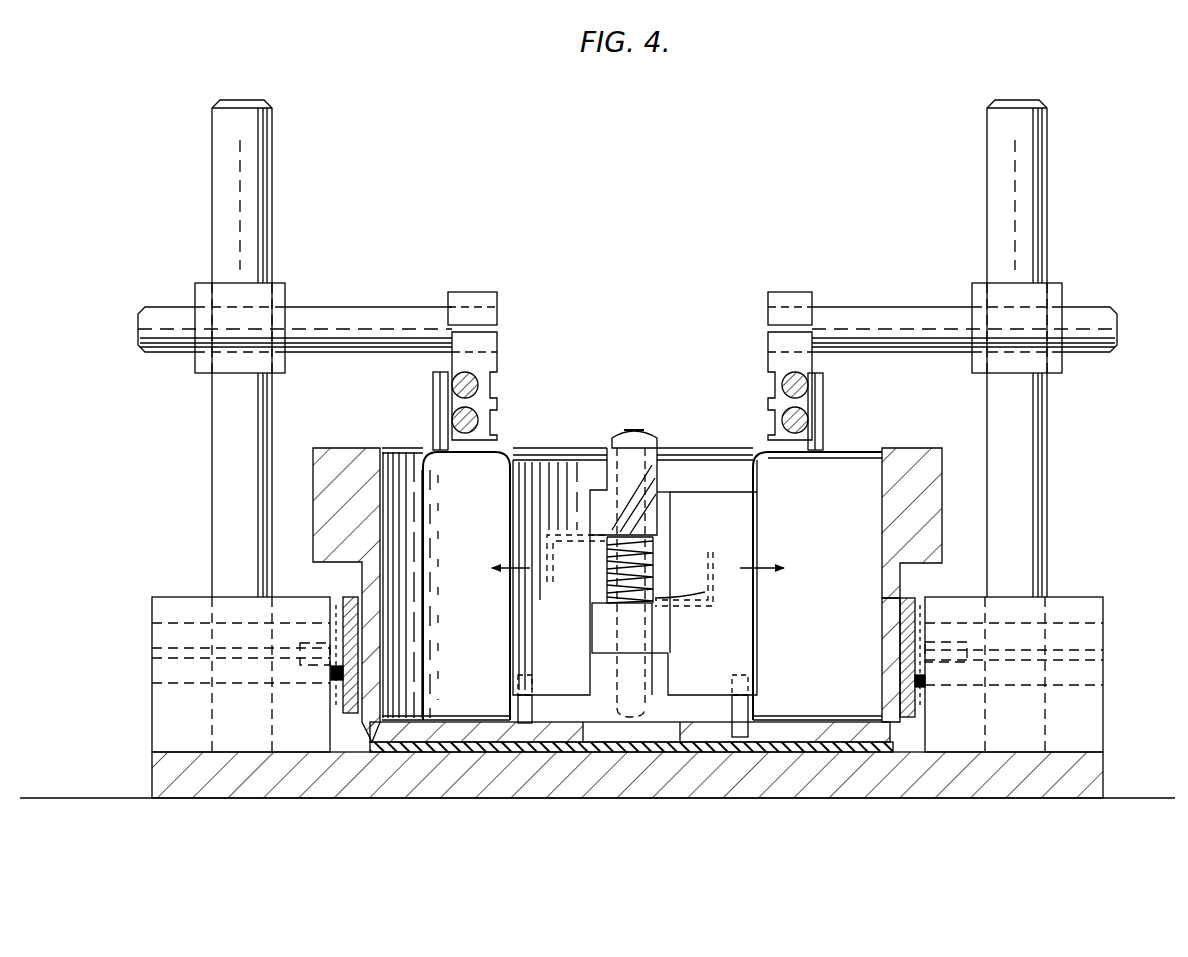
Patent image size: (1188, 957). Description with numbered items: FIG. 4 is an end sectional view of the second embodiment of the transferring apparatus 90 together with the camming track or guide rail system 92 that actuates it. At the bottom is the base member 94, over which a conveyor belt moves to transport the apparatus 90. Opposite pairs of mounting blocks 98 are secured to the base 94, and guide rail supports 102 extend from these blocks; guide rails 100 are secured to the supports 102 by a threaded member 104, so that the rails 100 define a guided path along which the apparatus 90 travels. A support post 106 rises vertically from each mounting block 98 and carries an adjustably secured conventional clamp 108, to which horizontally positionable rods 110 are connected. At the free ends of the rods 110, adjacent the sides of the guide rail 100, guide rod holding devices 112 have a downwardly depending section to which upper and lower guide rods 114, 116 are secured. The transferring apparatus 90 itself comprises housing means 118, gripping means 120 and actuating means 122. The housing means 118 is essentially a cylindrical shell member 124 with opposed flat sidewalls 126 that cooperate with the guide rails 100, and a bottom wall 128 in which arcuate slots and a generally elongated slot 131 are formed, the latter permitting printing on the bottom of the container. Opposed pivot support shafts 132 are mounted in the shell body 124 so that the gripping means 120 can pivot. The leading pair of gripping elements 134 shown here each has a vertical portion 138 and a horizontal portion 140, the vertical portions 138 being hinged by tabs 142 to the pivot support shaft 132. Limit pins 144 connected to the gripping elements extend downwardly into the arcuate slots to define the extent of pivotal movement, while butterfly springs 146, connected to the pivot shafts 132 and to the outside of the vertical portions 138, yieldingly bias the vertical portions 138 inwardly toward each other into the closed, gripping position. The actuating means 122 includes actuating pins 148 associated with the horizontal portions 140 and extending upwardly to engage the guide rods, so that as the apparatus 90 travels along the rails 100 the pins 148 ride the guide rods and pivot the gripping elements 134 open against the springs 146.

The transferring apparatus 90 is at (918, 424).
The camming track or guide rail system 92 is at (915, 134).
The base member 94 is at (1103, 760).
The mounting blocks 98 is at (172, 600).
The guide rails 100 is at (342, 596).
The guide rail supports 102 is at (338, 620).
The threaded member 104 is at (334, 682).
The support post 106 is at (262, 160).
The clamp 108 is at (282, 294).
The horizontally positionable rods 110 is at (352, 312).
The guide rod holding devices 112 is at (497, 334).
The upper guide rod 114 is at (477, 382).
The lower guide rod 116 is at (453, 422).
The housing means 118 is at (320, 446).
The gripping means 120 is at (578, 438).
The actuating means 122 is at (437, 378).
The cylindrical shell member 124 is at (885, 506).
The flat sidewalls 126 is at (352, 580).
The bottom wall 128 is at (822, 722).
The elongated slot 131 is at (586, 733).
The pivot support shafts 132 is at (618, 432).
The leading pair of gripping elements 134 is at (522, 456).
The vertical portions 138 is at (520, 508).
The horizontal portions 140 is at (427, 463).
The tabs 142 is at (662, 462).
The limit pins 144 is at (534, 710).
The butterfly springs 146 is at (656, 560).
The actuating pins 148 is at (436, 400).